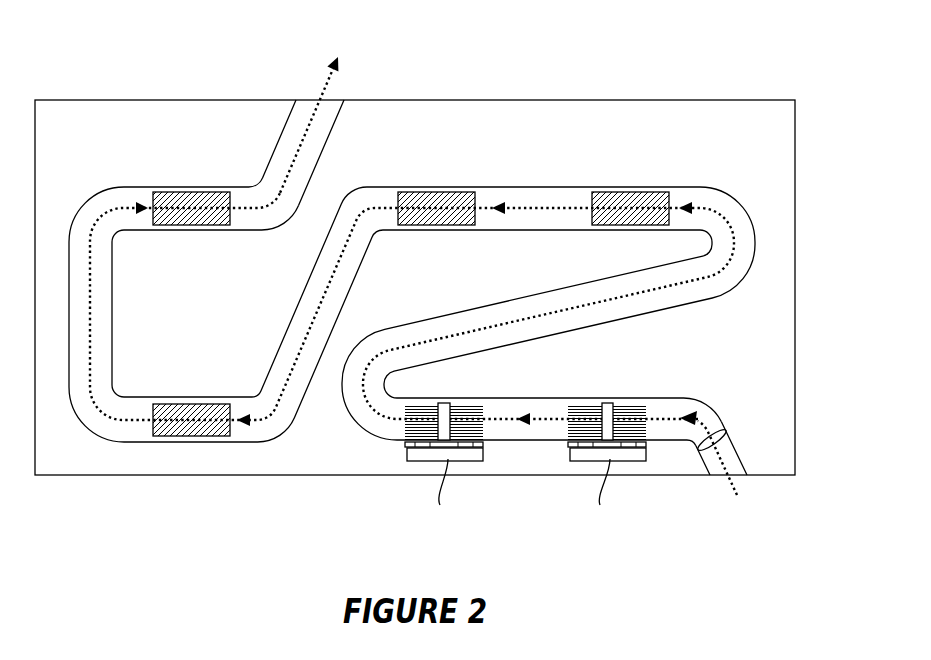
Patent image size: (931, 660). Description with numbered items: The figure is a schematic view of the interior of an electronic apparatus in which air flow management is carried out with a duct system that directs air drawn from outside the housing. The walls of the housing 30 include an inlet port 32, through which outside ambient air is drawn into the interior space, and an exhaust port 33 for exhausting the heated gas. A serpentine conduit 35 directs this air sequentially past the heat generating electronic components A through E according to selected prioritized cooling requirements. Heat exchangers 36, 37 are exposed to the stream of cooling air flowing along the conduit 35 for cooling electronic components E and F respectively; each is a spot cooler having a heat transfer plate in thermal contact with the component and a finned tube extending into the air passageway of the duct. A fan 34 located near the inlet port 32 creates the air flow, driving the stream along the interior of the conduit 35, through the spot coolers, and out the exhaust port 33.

The housing 30 is at (796, 290).
The inlet port 32 is at (742, 477).
The exhaust port 33 is at (303, 98).
The fan 34 is at (723, 431).
The conduit 35 is at (697, 400).
The heat exchanger 36 is at (435, 425).
The heat exchanger 37 is at (568, 435).